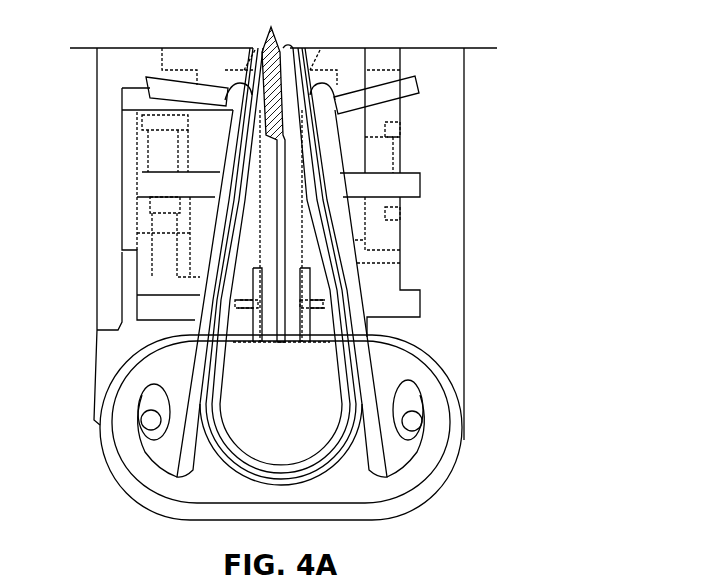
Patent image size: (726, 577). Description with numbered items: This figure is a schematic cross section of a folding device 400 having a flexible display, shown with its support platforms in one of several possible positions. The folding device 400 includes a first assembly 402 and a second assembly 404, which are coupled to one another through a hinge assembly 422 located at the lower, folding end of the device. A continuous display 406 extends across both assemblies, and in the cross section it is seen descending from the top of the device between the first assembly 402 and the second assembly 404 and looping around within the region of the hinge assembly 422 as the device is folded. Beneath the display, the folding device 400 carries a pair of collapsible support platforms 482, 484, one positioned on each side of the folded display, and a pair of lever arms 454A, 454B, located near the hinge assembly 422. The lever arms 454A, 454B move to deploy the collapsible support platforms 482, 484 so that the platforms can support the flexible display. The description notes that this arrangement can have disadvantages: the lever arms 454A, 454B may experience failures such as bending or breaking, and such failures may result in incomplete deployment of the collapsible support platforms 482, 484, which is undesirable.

The folding device 400 is at (540, 138).
The first assembly 402 is at (112, 192).
The second assembly 404 is at (452, 220).
The continuous display 406 is at (291, 49).
The collapsible support platform 482 is at (200, 358).
The collapsible support platform 484 is at (367, 354).
The lever arm 454A is at (412, 423).
The lever arm 454B is at (150, 420).
The hinge assembly 422 is at (362, 503).